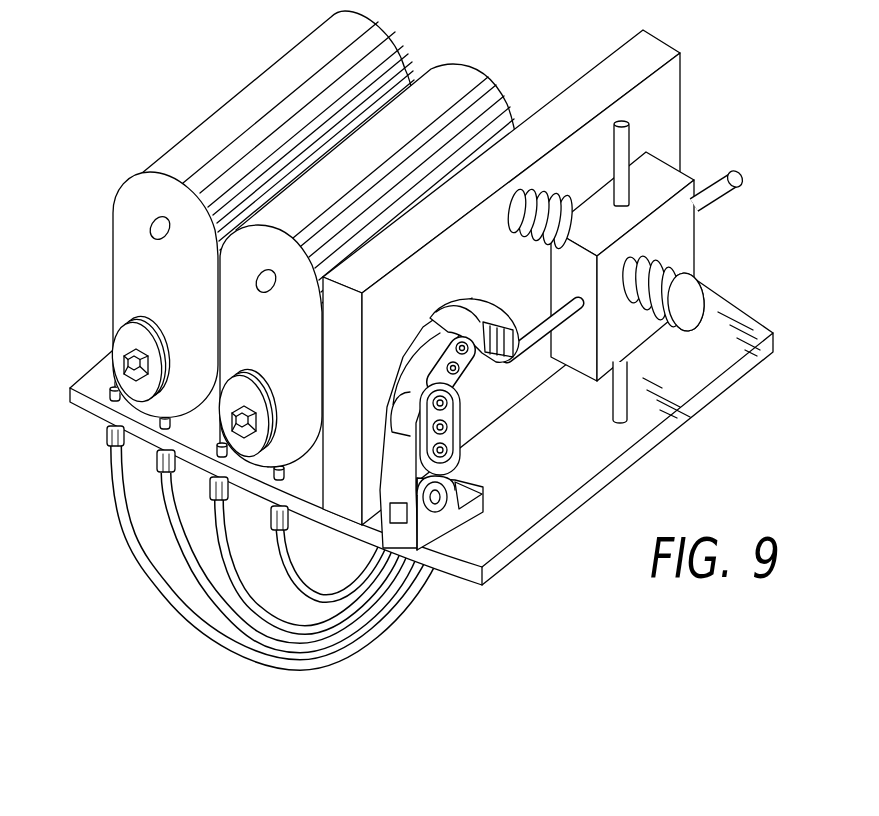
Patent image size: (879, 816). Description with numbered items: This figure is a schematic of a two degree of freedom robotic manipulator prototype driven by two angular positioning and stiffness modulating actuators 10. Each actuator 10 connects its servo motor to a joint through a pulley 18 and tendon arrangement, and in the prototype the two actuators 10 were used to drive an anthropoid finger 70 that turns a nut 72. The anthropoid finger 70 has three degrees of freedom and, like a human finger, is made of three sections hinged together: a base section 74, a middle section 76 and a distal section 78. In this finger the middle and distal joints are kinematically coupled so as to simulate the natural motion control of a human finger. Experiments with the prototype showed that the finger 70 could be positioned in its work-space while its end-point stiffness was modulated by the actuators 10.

The angular positioning and stiffness modulating actuator 10 is at (198, 163).
The pulley 18 is at (118, 344).
The anthropoid finger 70 is at (447, 556).
The nut 72 is at (661, 182).
The base section 74 is at (455, 462).
The middle section 76 is at (476, 387).
The distal section 78 is at (510, 350).